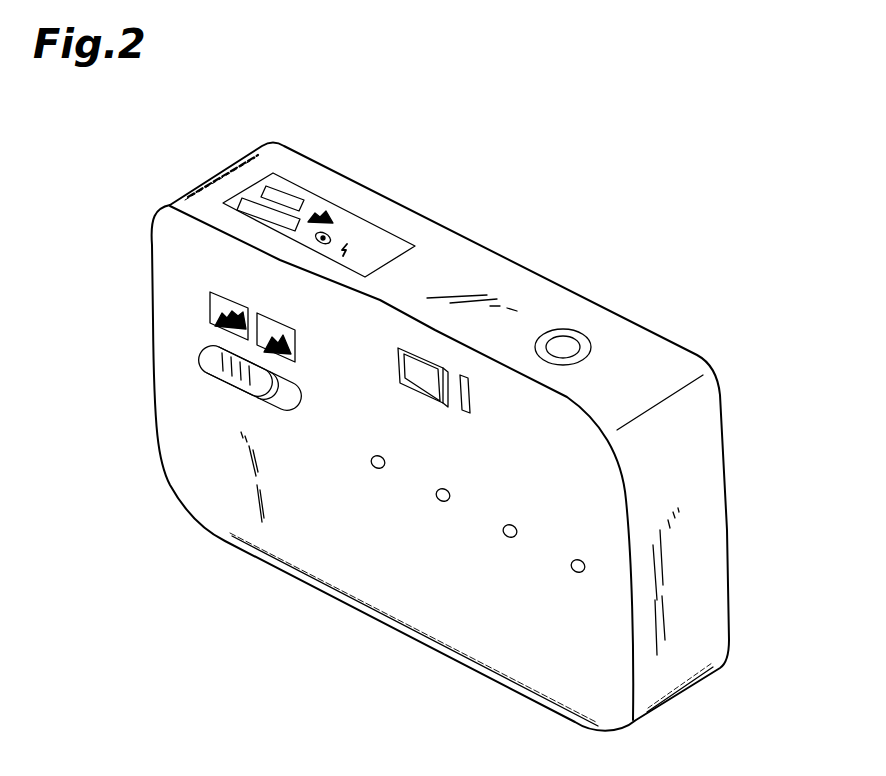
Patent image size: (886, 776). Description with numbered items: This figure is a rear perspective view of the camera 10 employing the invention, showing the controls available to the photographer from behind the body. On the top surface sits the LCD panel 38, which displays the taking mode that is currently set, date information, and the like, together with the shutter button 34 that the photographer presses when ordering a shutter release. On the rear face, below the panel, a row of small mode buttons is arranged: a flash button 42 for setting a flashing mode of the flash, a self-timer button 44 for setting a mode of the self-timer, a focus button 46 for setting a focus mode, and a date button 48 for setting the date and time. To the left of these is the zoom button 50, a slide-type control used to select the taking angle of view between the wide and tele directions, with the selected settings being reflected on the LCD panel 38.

The camera 10 is at (491, 225).
The shutter button 34 is at (563, 343).
The LCD panel 38 is at (387, 243).
The flash button 42 is at (375, 457).
The self-timer button 44 is at (438, 489).
The focus button 46 is at (505, 524).
The date button 48 is at (574, 560).
The zoom button 50 is at (213, 375).